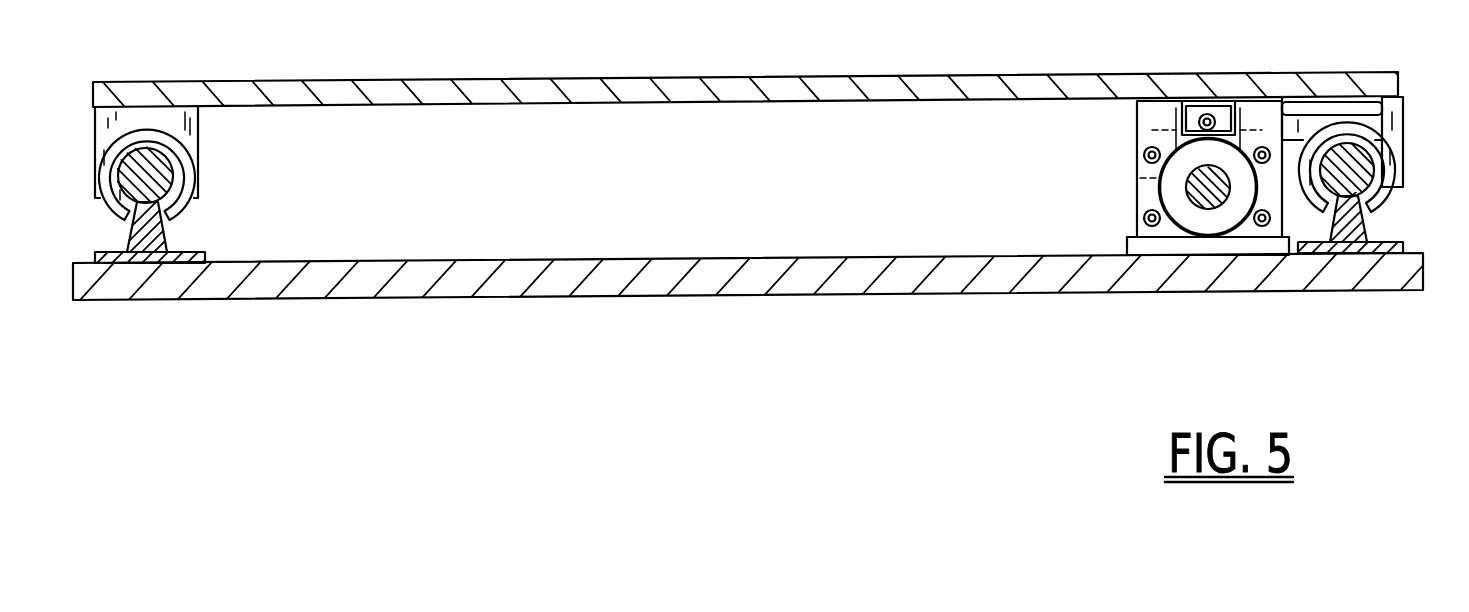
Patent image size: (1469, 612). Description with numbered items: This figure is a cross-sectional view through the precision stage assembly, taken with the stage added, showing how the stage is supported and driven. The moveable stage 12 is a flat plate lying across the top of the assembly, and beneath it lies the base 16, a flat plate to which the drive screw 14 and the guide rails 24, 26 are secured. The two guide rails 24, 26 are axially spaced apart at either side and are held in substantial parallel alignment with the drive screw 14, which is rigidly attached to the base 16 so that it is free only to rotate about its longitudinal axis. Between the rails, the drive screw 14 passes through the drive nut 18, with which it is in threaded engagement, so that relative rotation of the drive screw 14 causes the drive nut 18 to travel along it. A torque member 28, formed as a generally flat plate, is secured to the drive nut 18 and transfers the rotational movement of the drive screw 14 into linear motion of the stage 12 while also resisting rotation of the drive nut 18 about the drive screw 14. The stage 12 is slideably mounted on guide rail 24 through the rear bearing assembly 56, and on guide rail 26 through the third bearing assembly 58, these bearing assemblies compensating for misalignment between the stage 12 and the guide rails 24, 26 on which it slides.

The moveable stage 12 is at (776, 78).
The base 16 is at (524, 268).
The third bearing assembly 58 is at (188, 133).
The guide rail 26 is at (180, 206).
The torque member 28 is at (1137, 121).
The drive nut 18 is at (1156, 197).
The drive screw 14 is at (1186, 195).
The rear bearing assembly 56 is at (1400, 166).
The guide rail 24 is at (1374, 194).